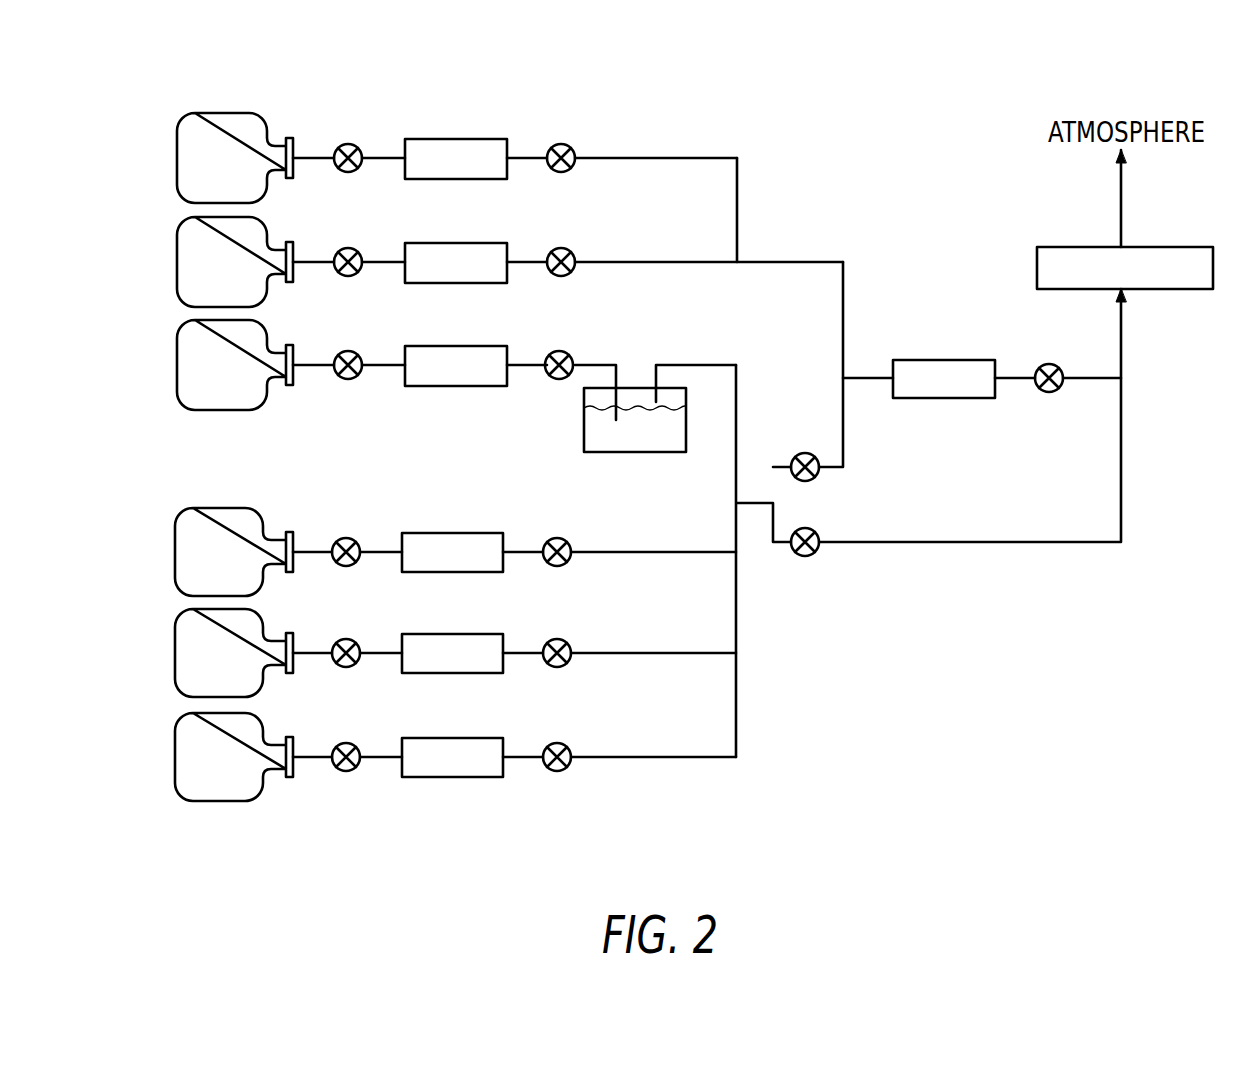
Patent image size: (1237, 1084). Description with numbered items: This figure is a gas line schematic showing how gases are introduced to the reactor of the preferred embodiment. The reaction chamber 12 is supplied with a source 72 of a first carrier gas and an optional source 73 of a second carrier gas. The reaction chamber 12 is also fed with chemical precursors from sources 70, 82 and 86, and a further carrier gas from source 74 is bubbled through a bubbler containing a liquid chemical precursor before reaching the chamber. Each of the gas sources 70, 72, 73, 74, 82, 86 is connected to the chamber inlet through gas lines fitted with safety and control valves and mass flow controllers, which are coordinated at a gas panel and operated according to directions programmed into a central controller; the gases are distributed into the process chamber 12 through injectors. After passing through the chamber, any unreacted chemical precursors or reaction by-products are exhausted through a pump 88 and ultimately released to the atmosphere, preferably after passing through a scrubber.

The source of second carrier gas 73 is at (267, 128).
The source of first carrier gas 72 is at (267, 232).
The carrier gas source 74 is at (267, 337).
The chemical precursor source 70 is at (262, 522).
The chemical precursor source 82 is at (263, 627).
The chemical precursor source 86 is at (263, 730).
The reaction chamber 12 is at (945, 360).
The pump 88 is at (1065, 247).